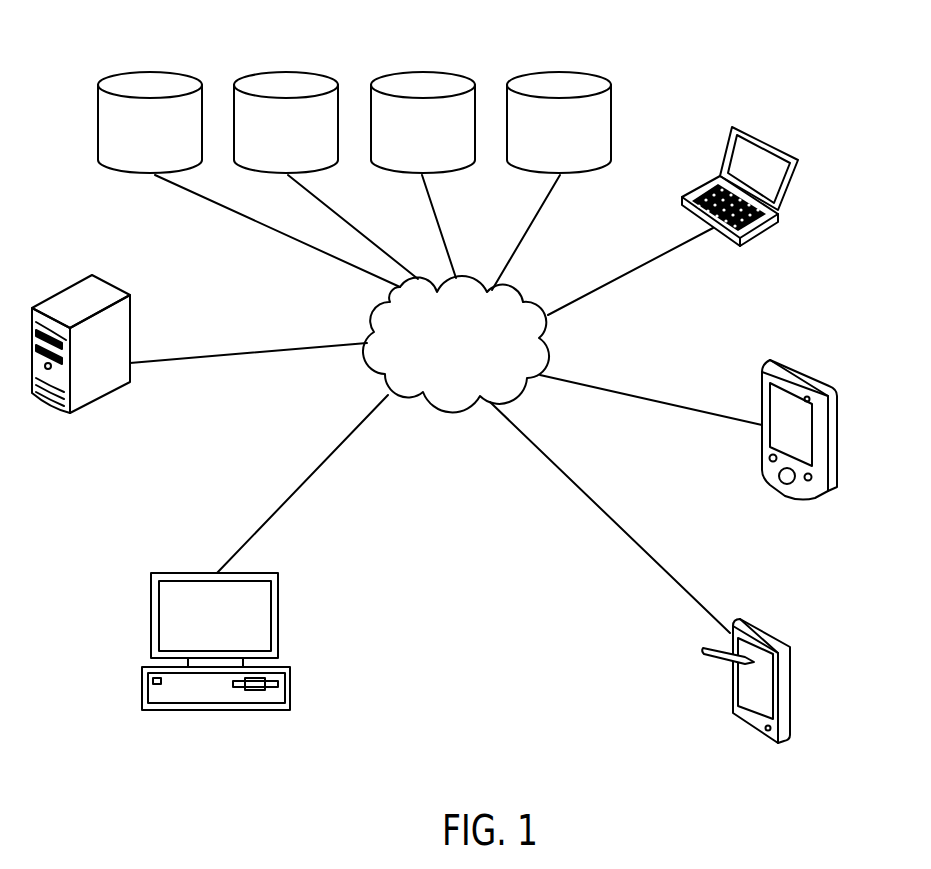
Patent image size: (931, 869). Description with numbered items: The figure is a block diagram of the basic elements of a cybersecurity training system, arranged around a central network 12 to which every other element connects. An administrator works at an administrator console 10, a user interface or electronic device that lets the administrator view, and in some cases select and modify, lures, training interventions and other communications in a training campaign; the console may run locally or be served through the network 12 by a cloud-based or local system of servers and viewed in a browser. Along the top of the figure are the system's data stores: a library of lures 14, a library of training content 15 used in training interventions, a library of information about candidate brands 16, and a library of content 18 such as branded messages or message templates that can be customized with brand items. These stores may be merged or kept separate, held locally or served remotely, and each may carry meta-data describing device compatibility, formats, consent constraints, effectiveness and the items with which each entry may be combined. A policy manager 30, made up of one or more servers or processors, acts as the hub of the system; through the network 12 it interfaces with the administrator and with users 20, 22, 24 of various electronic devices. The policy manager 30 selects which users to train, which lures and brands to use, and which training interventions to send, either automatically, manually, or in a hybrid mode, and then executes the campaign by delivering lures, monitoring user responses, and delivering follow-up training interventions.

The administrator console 10 is at (207, 710).
The network 12 is at (455, 410).
The library of lures 14 is at (138, 72).
The library of training content 15 is at (272, 72).
The candidate brands library 16 is at (437, 72).
The content library 18 is at (550, 72).
The user 20 is at (798, 189).
The user 22 is at (837, 428).
The user 24 is at (792, 683).
The policy manager 30 is at (73, 288).